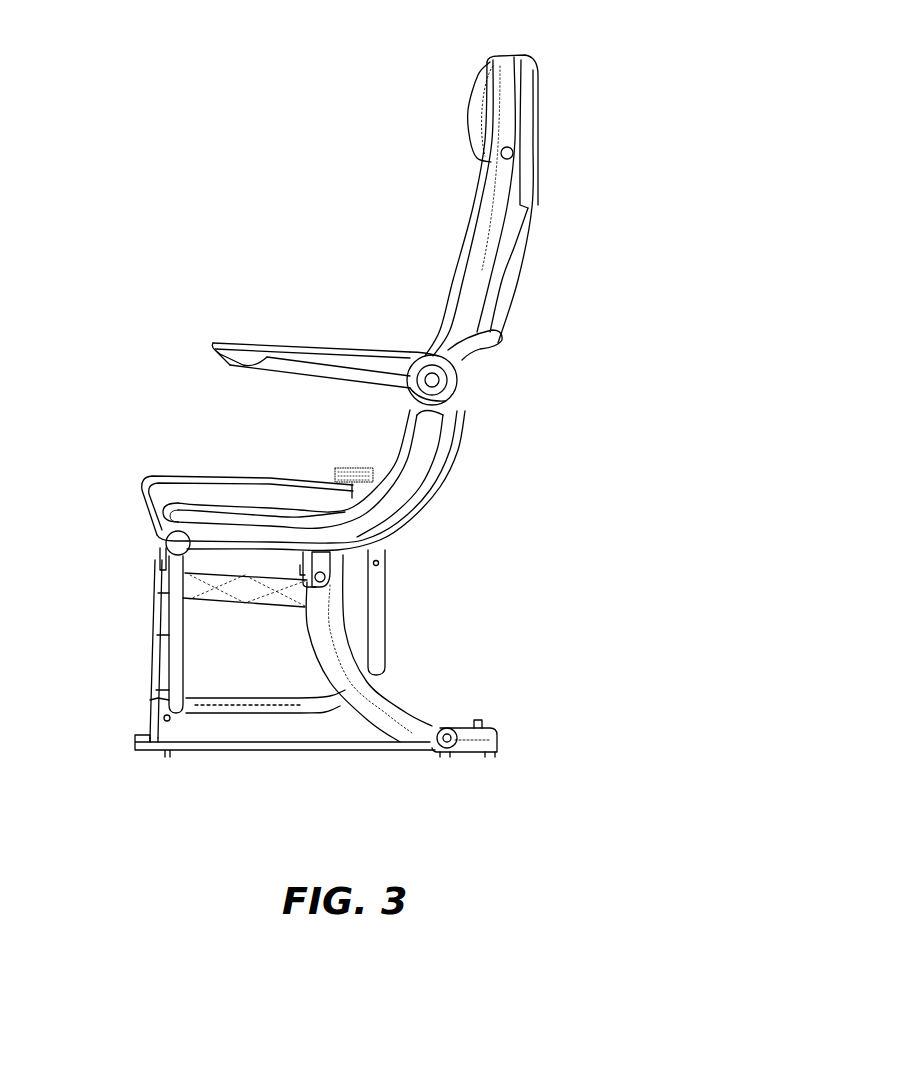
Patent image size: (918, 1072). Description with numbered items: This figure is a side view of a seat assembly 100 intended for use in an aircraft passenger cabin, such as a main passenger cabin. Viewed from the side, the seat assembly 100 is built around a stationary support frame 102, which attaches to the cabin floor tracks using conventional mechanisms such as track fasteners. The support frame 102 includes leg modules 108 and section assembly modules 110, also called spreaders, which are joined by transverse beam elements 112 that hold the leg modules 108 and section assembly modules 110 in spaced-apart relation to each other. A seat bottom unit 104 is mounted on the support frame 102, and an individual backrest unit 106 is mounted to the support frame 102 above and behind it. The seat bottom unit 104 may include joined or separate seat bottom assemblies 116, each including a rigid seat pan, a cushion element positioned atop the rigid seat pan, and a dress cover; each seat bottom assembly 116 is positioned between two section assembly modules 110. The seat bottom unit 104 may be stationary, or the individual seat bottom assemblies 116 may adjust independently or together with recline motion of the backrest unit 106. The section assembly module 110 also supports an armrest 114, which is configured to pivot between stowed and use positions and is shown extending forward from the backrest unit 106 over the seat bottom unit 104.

The seat assembly 100 is at (422, 200).
The support frame 102 is at (140, 640).
The seat bottom unit 104 is at (135, 475).
The backrest unit 106 is at (540, 90).
The leg module 108 is at (384, 710).
The section assembly module 110 is at (407, 487).
The transverse beam element 112 is at (175, 545).
The armrest 114 is at (235, 350).
The seat bottom assembly 116 is at (248, 492).